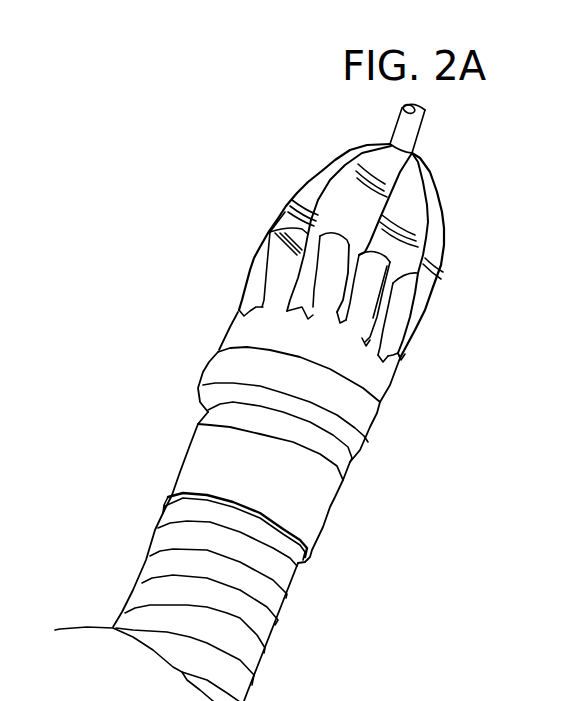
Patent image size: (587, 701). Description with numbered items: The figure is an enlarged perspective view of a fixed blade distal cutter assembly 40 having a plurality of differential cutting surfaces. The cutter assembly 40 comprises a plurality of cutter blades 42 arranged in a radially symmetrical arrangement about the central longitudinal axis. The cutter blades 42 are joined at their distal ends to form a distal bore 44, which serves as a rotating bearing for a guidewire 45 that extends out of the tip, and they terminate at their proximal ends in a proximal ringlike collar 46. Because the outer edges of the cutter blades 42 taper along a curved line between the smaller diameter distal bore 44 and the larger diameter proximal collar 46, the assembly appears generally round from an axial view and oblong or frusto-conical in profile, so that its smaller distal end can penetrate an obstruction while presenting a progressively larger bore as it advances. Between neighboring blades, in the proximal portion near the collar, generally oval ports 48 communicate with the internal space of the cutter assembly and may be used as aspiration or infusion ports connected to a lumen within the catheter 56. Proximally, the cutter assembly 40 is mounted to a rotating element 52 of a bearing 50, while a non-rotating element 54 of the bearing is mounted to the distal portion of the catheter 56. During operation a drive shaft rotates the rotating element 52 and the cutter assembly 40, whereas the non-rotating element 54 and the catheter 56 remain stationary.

The cutter assembly 40 is at (228, 202).
The cutter blades 42 is at (303, 190).
The distal bore 44 is at (413, 153).
The guidewire 45 is at (427, 128).
The proximal ringlike collar 46 is at (384, 385).
The ports 48 is at (396, 328).
The bearing 50 is at (370, 480).
The rotating element 52 is at (208, 376).
The non-rotating element 54 is at (183, 465).
The catheter 56 is at (143, 577).